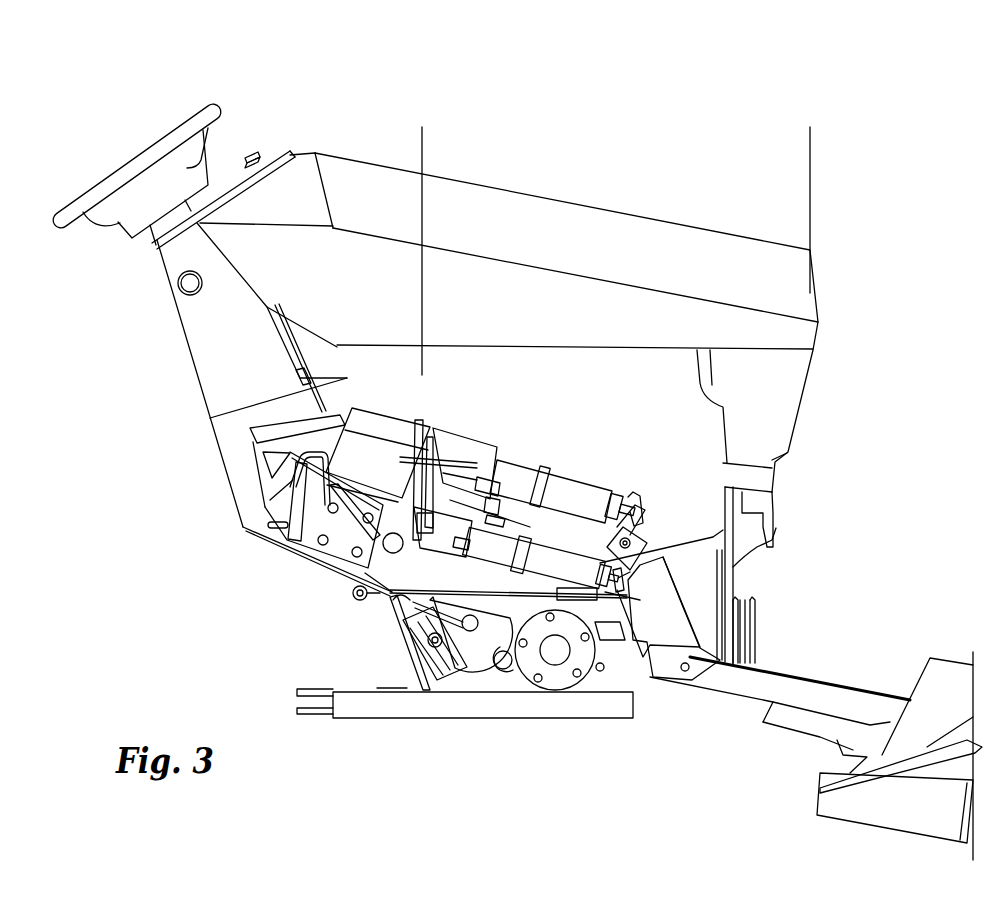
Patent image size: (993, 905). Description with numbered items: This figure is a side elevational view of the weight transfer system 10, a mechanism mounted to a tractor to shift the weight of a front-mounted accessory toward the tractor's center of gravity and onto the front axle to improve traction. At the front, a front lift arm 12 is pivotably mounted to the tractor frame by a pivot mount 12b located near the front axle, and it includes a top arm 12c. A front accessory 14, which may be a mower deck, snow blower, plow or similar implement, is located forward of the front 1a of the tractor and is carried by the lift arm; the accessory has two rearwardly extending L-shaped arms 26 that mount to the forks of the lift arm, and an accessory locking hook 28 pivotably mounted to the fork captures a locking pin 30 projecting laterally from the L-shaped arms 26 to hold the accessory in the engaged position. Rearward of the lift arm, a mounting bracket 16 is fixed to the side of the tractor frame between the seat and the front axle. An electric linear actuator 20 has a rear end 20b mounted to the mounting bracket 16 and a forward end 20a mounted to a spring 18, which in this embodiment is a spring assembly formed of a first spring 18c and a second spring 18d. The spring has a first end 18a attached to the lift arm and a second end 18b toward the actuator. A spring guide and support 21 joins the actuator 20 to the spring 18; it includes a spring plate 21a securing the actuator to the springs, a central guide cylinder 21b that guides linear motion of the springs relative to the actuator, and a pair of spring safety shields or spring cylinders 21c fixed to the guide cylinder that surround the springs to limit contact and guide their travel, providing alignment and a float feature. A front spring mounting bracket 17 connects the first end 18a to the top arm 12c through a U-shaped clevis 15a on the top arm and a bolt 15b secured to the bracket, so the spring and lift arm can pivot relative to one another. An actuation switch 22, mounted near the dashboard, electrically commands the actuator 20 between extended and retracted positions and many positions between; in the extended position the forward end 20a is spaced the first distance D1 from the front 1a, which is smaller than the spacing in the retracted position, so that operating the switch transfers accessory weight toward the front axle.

The front of the tractor 1a is at (808, 292).
The weight transfer system 10 is at (540, 408).
The front lift arm 12 is at (630, 660).
The pivot mount 12b is at (603, 675).
The top arm 12c is at (662, 570).
The front accessory 14 is at (930, 683).
The U-shaped bracket or clevis 15a is at (605, 558).
The bolt 15b is at (633, 518).
The mounting bracket 16 is at (303, 505).
The front spring mounting bracket 17 is at (616, 532).
The spring assembly 18 is at (552, 440).
The first end of the spring 18a is at (628, 496).
The second end of the spring 18b is at (455, 440).
The first spring 18c is at (570, 485).
The second spring 18d is at (546, 570).
The electric linear actuator 20 is at (362, 418).
The forward end of the actuator 20a is at (362, 570).
The rear end of the actuator 20b is at (325, 428).
The spring guide and support 21 is at (462, 535).
The spring plate 21a is at (430, 440).
The central guide cylinder 21b is at (460, 452).
The spring safety shields 21c is at (488, 468).
The actuation switch 22 is at (182, 288).
The L-shaped arms 26 is at (737, 683).
The accessory locking hook 28 is at (653, 665).
The locking pin 30 is at (684, 672).
The first distance D1 is at (428, 137).